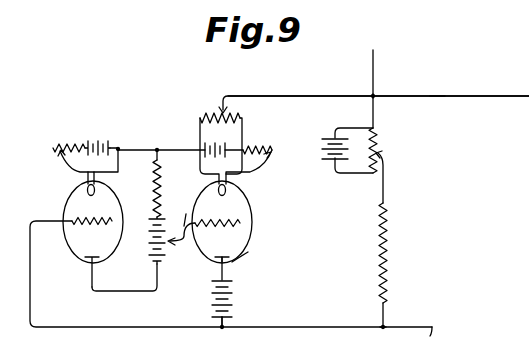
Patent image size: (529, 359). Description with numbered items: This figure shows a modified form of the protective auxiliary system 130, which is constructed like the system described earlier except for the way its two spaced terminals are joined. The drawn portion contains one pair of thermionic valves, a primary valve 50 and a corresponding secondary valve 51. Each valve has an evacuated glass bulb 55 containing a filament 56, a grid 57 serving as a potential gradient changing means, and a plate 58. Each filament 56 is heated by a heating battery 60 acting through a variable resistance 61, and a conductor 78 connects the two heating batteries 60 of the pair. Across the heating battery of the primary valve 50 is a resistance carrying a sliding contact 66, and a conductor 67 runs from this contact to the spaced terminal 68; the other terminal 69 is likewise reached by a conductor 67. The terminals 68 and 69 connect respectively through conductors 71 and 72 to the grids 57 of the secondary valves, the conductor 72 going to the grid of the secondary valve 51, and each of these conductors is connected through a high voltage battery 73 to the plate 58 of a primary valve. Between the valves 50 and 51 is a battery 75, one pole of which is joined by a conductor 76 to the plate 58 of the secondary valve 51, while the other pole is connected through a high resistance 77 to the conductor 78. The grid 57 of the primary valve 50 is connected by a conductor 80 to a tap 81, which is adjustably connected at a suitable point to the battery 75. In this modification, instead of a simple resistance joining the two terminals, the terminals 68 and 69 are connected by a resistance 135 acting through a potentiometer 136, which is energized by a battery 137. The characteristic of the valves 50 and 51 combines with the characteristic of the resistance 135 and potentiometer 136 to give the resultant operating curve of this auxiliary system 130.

The primary valve 50 is at (234, 222).
The secondary valve 51 is at (66, 202).
The glass bulb 55 is at (83, 258).
The filament 56 is at (86, 190).
The grid 57 is at (76, 224).
The plate 58 is at (250, 252).
The heating battery 60 is at (212, 157).
The variable resistance 61 is at (165, 139).
The sliding contact 66 is at (229, 113).
The conductor 67 is at (303, 96).
The terminal 68 is at (375, 96).
The terminal 69 is at (382, 328).
The conductor 71 is at (436, 97).
The conductor 72 is at (221, 334).
The high voltage battery 73 is at (232, 298).
The battery 75 is at (151, 247).
The conductor 76 is at (124, 287).
The high resistance 77 is at (161, 196).
The conductor 78 is at (159, 148).
The conductor 80 is at (179, 213).
The tap 81 is at (181, 248).
The protective auxiliary system 130 is at (447, 59).
The resistance 135 is at (386, 258).
The potentiometer 136 is at (380, 152).
The battery 137 is at (322, 152).